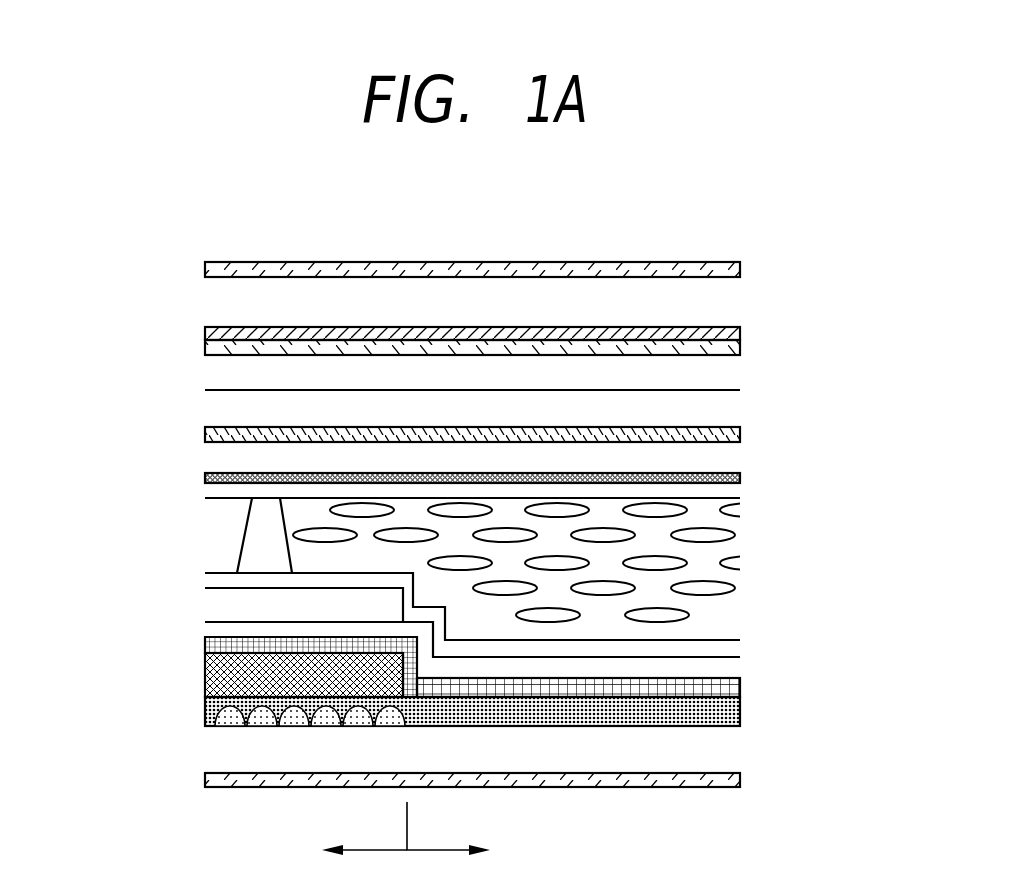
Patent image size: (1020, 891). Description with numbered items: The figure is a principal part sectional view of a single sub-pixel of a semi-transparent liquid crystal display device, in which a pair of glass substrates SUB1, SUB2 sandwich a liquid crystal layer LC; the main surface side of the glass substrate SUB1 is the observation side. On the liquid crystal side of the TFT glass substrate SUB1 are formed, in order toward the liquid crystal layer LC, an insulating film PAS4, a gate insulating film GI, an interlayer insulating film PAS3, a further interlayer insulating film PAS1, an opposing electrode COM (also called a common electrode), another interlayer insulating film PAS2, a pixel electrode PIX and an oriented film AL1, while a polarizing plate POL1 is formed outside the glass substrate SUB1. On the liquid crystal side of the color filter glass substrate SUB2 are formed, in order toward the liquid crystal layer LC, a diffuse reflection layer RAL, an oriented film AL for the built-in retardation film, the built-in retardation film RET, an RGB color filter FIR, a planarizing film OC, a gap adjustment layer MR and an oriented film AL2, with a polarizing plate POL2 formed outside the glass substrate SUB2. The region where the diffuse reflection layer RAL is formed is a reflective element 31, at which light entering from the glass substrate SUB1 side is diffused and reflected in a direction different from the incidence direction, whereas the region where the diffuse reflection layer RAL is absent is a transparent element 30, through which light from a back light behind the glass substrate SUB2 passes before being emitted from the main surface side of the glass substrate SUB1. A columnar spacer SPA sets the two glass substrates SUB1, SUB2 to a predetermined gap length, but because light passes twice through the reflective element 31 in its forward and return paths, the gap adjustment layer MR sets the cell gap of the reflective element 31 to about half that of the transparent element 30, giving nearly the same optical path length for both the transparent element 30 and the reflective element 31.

The polarizing plate POL1 is at (732, 271).
The glass substrate SUB1 is at (730, 302).
The insulating film PAS4 is at (220, 338).
The gate insulating film GI is at (730, 348).
The interlayer insulating film PAS3 is at (222, 376).
The interlayer insulating film PAS1 is at (730, 410).
The opposing electrode COM is at (222, 420).
The interlayer insulating film PAS2 is at (222, 457).
The pixel electrode PIX is at (742, 475).
The oriented film AL1 is at (742, 488).
The columnar spacer SPA is at (246, 534).
The liquid crystal layer LC is at (713, 558).
The gap adjustment layer MR is at (227, 603).
The oriented film AL2 is at (732, 643).
The planarizing film OC is at (732, 668).
The RGB color filter FIR is at (207, 643).
The built-in retardation film RET is at (208, 673).
The oriented film for built-in retardation film AL is at (732, 708).
The diffuse reflection layer RAL is at (230, 718).
The glass substrate SUB2 is at (732, 748).
The polarizing plate POL2 is at (733, 773).
The reflective element 31 is at (340, 851).
The transparent element 30 is at (474, 834).